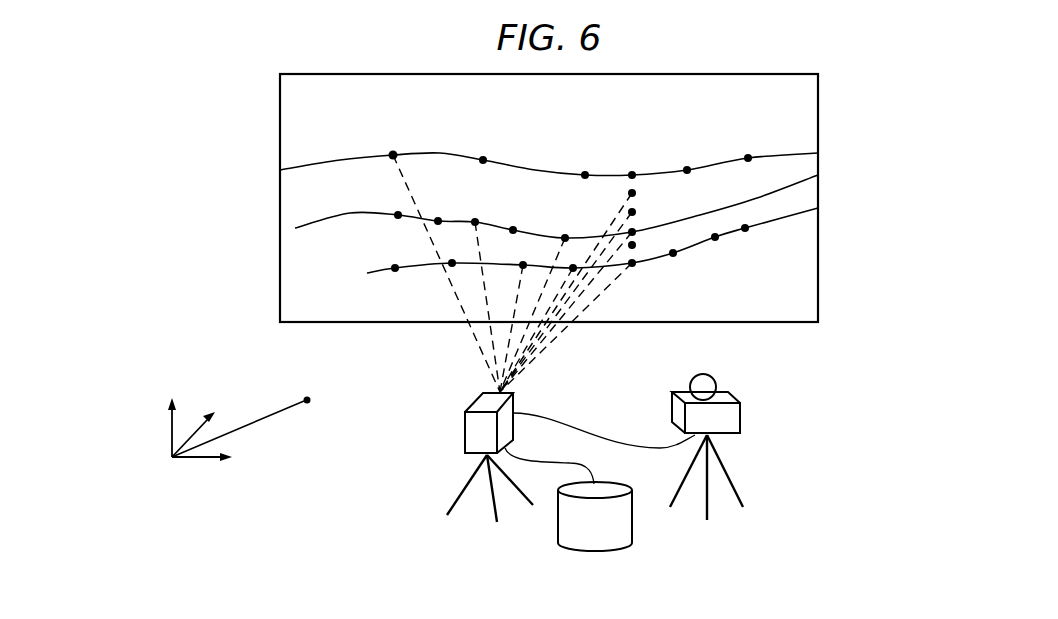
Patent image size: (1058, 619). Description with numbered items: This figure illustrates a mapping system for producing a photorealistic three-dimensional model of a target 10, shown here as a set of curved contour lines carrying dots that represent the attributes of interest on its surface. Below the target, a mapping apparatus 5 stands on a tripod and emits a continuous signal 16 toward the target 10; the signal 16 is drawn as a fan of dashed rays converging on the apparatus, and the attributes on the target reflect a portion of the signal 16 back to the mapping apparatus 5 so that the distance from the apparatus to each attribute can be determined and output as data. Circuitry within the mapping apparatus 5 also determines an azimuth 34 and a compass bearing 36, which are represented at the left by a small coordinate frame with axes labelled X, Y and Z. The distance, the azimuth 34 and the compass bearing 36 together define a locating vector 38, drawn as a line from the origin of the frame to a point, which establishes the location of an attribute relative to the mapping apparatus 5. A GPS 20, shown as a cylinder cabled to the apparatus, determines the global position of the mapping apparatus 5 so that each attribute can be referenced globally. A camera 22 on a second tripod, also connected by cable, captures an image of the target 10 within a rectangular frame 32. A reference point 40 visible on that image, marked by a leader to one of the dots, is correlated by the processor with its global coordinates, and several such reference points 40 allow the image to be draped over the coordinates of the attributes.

The mapping apparatus 5 is at (446, 441).
The target 10 is at (562, 143).
The signal 16 is at (478, 350).
The GPS unit 20 is at (633, 523).
The camera 22 is at (740, 418).
The image frame 32 is at (818, 115).
The azimuth 34 is at (172, 425).
The compass bearing 36 is at (203, 458).
The locating vector 38 is at (290, 407).
The reference point 40 is at (388, 152).